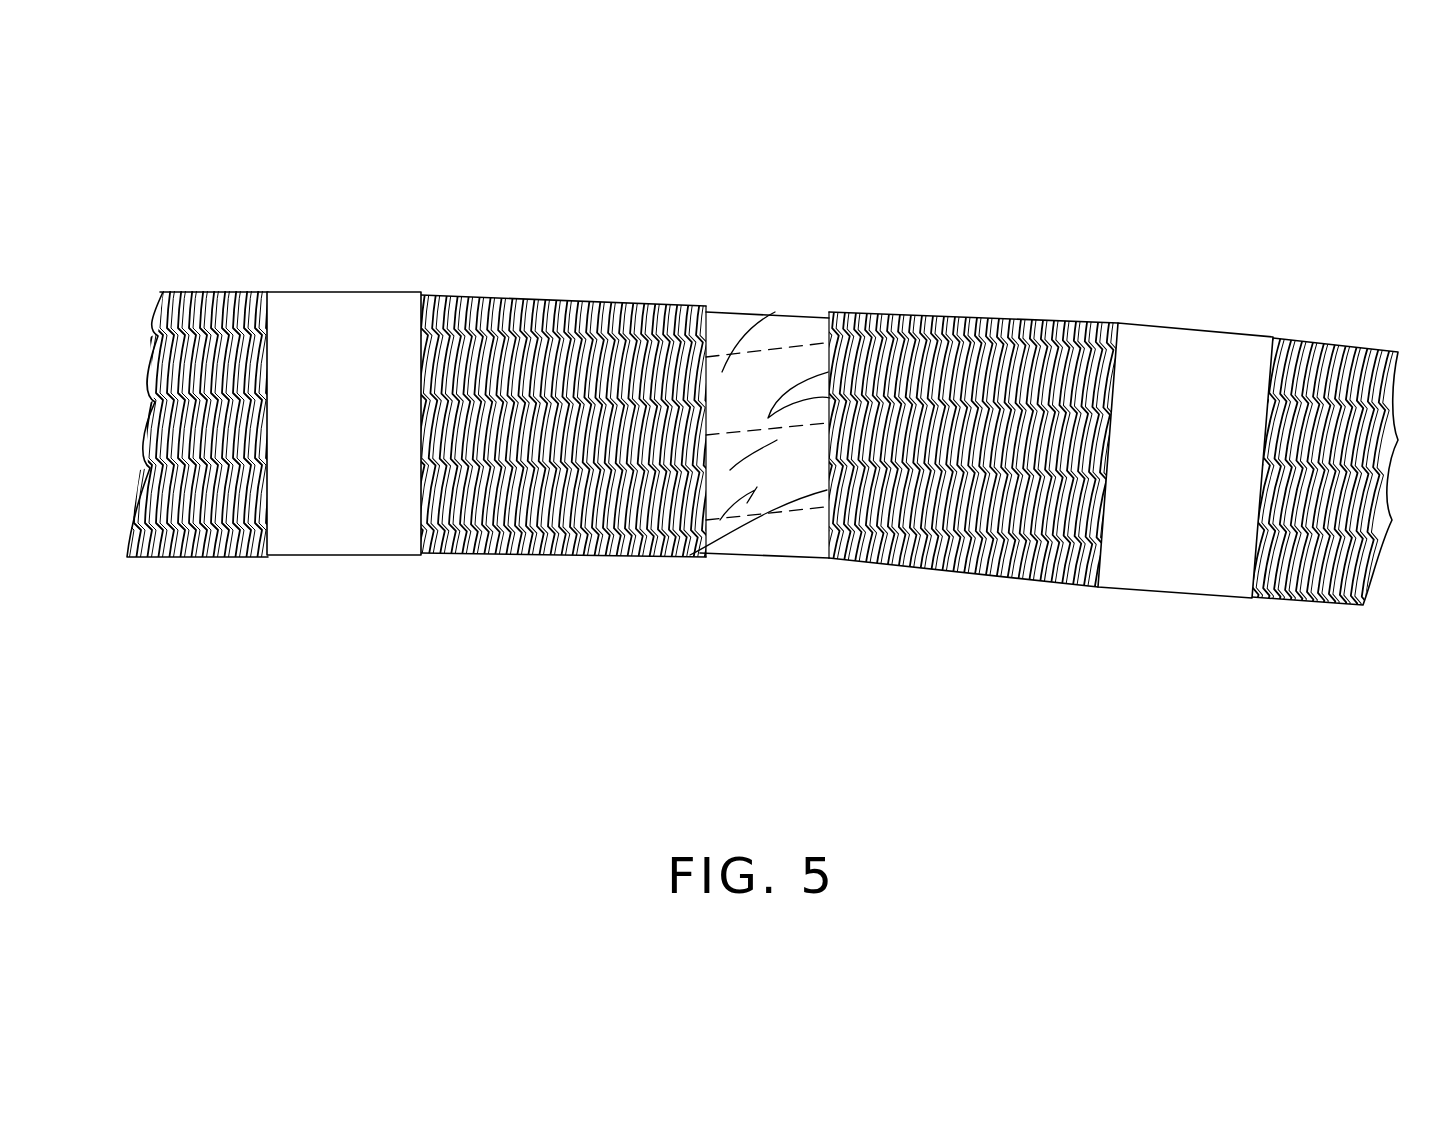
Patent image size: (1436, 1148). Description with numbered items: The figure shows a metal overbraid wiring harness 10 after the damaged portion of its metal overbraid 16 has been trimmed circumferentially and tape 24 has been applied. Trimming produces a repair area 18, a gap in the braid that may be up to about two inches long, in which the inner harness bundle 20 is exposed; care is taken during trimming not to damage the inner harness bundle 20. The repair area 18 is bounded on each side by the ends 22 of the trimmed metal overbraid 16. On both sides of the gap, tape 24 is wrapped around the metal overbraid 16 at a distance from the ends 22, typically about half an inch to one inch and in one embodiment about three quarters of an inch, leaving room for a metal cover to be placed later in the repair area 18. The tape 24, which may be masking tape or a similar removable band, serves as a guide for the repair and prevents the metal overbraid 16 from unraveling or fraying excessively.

The metal overbraid wiring harness 10 is at (276, 176).
The metal overbraid 16 is at (1337, 345).
The repair area 18 is at (683, 578).
The inner harness bundle 20 is at (782, 372).
The ends of the repair area 22 is at (710, 357).
The tape 24 is at (344, 307).